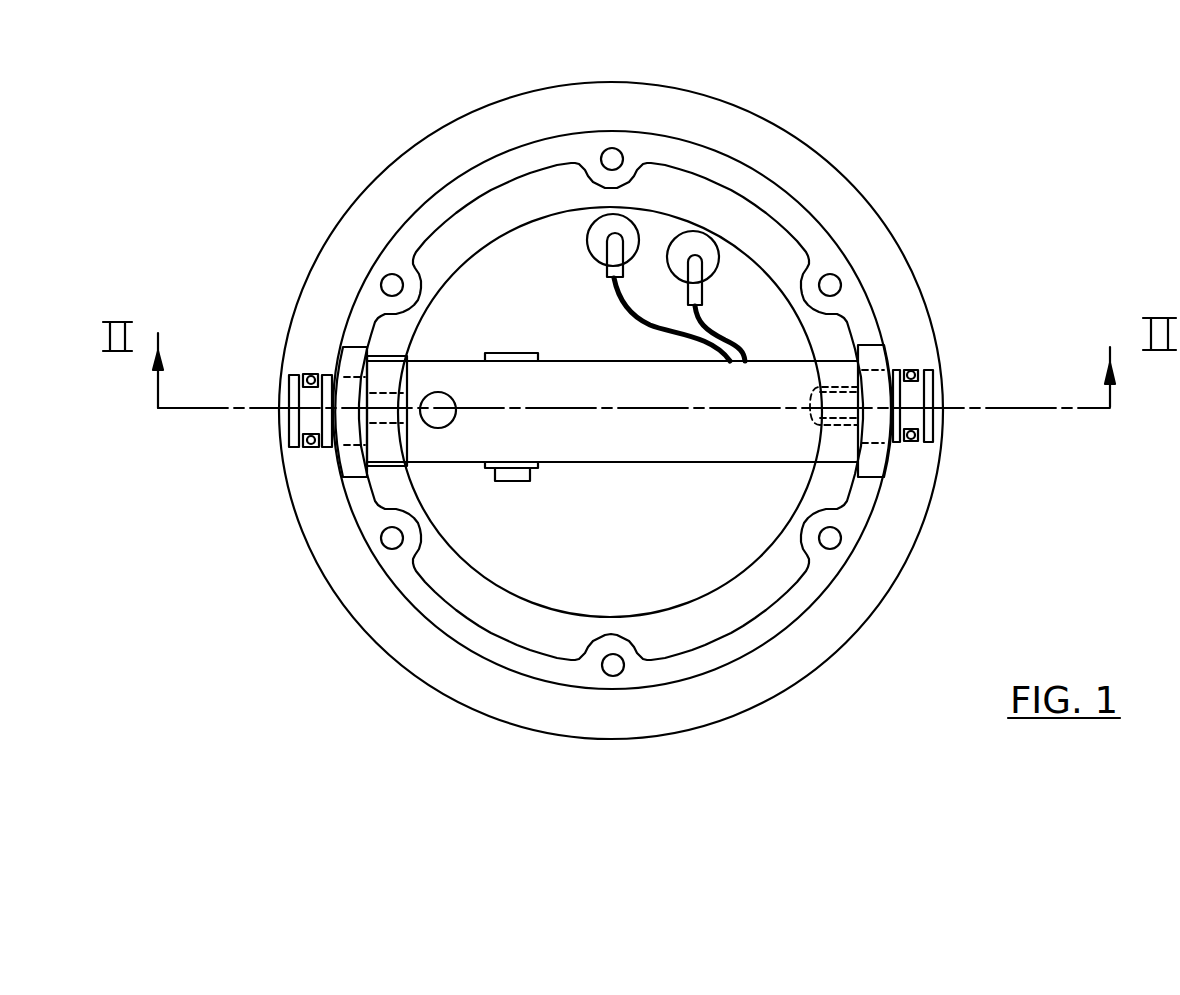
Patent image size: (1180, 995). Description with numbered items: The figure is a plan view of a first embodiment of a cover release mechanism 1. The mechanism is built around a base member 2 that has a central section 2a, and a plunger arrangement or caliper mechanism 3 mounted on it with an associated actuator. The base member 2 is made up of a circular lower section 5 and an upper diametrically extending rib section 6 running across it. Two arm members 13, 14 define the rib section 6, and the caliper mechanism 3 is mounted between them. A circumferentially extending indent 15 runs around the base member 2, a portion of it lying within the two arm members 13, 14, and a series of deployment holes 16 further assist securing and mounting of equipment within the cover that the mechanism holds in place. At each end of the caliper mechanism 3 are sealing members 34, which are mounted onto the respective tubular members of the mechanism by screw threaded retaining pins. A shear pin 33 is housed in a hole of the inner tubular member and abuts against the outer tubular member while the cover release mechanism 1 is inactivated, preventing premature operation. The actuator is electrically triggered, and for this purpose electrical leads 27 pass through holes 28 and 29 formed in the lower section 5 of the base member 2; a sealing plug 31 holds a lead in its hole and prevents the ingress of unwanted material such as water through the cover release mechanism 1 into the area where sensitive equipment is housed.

The cover release mechanism 1 is at (658, 410).
The base member 2 is at (927, 527).
The central section 2a is at (595, 562).
The plunger arrangement or caliper mechanism 3 is at (638, 450).
The circular lower section 5 is at (805, 702).
The upper diametrically extending rib section 6 is at (850, 374).
The arm member 13 is at (874, 423).
The arm member 14 is at (345, 372).
The circumferentially extending indent 15 is at (473, 603).
The deployment holes 16 is at (620, 673).
The electrical leads 27 is at (737, 333).
The hole 28 is at (632, 218).
The hole 29 is at (707, 241).
The sealing plug 31 is at (720, 247).
The shear pin 33 is at (438, 412).
The sealing members 34 is at (287, 433).